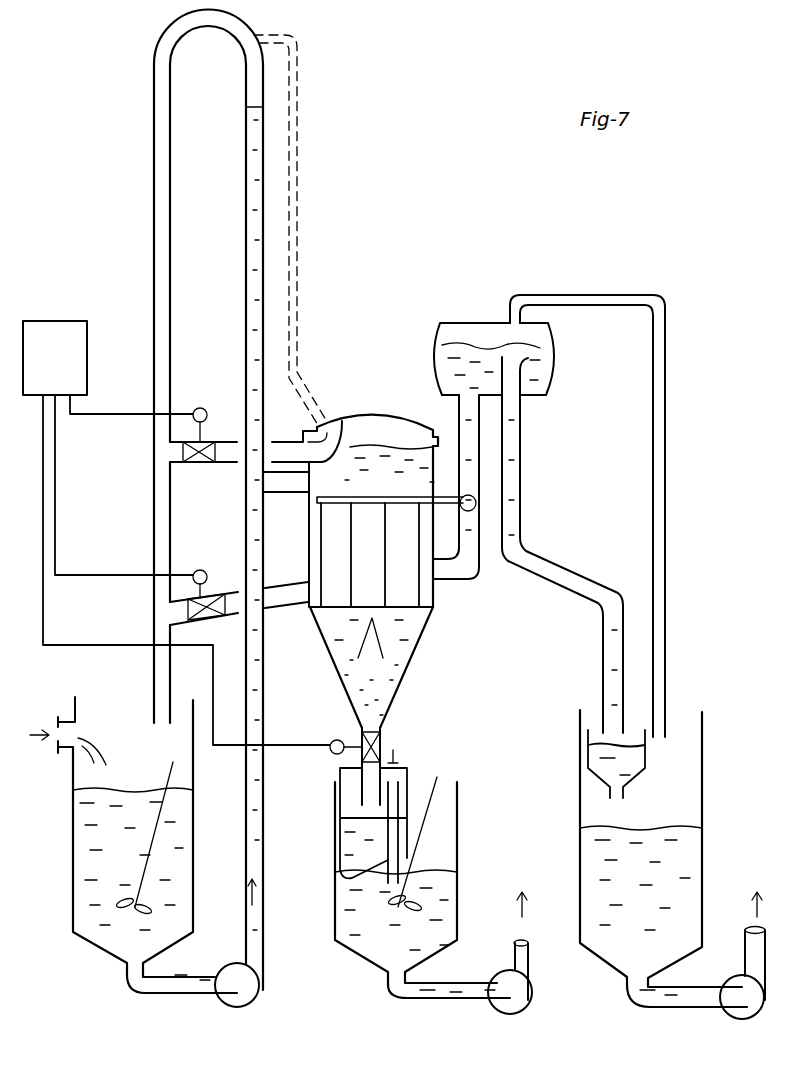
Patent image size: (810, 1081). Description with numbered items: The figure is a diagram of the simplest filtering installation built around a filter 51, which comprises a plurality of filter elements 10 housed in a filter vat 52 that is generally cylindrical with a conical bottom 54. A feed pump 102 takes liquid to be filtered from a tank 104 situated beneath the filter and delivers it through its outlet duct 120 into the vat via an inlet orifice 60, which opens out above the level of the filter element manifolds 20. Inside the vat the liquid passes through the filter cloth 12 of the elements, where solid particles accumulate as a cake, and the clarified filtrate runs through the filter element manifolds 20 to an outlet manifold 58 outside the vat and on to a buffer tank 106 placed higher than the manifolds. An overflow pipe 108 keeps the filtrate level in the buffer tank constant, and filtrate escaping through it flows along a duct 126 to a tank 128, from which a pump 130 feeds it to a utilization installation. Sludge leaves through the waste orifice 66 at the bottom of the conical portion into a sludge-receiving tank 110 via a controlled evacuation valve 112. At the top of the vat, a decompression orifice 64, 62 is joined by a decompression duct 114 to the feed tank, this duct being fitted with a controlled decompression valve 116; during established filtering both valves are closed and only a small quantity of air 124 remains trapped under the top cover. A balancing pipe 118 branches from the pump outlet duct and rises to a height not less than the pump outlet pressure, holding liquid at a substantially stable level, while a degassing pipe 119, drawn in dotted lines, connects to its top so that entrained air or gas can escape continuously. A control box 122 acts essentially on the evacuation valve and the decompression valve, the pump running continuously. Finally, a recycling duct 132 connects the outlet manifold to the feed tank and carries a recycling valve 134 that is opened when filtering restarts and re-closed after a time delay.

The filter elements 10 is at (375, 559).
The filter cloth 12 is at (410, 594).
The filter element manifolds 20 is at (397, 498).
The filter 51 is at (426, 660).
The filter vat 52 is at (308, 560).
The conical bottom 54 is at (378, 695).
The outlet manifold 58 is at (476, 511).
The inlet orifice 60 is at (298, 482).
The decompression orifice 62 is at (292, 452).
The decompression orifice 64 is at (342, 437).
The waste orifice 66 is at (370, 725).
The feed pump 102 is at (245, 1003).
The tank 104 is at (101, 937).
The buffer tank 106 is at (457, 347).
The overflow pipe 108 is at (520, 373).
The sludge-receiving tank 110 is at (365, 943).
The evacuation valve 112 is at (378, 745).
The decompression duct 114 is at (230, 458).
The decompression valve 116 is at (207, 440).
The balancing pipe 118 is at (255, 170).
The degassing pipe 119 is at (297, 228).
The outlet duct 120 is at (263, 796).
The control box 122 is at (62, 370).
The air 124 is at (380, 428).
The duct 126 is at (555, 578).
The tank 128 is at (682, 857).
The pump 130 is at (738, 1013).
The recycling duct 132 is at (283, 597).
The recycling valve 134 is at (208, 592).